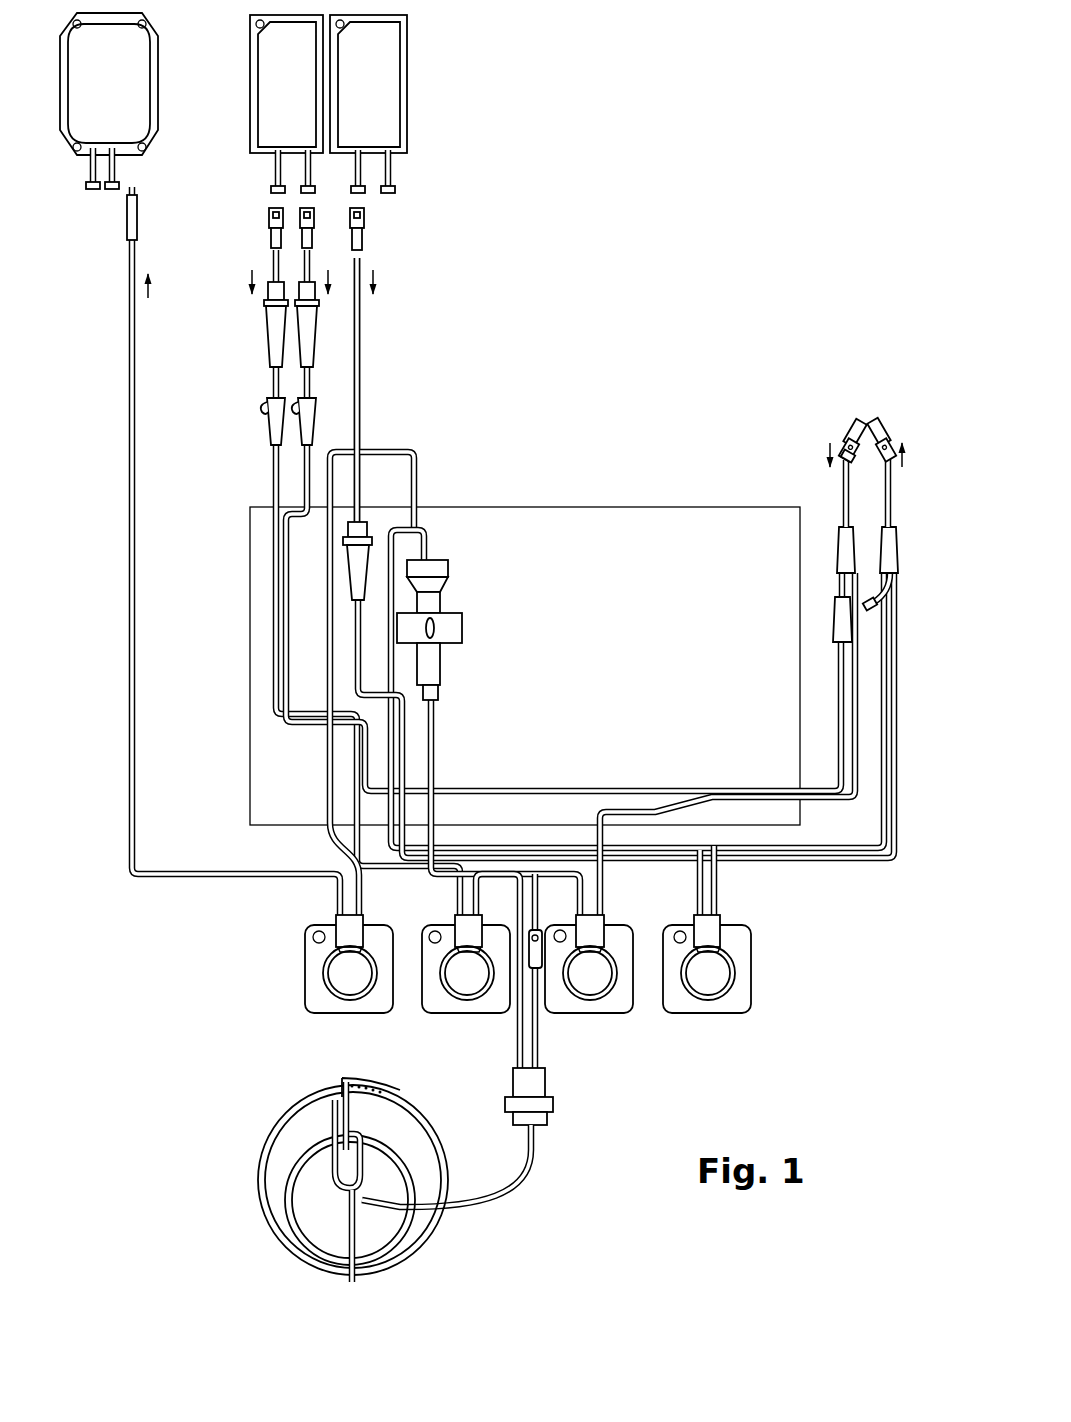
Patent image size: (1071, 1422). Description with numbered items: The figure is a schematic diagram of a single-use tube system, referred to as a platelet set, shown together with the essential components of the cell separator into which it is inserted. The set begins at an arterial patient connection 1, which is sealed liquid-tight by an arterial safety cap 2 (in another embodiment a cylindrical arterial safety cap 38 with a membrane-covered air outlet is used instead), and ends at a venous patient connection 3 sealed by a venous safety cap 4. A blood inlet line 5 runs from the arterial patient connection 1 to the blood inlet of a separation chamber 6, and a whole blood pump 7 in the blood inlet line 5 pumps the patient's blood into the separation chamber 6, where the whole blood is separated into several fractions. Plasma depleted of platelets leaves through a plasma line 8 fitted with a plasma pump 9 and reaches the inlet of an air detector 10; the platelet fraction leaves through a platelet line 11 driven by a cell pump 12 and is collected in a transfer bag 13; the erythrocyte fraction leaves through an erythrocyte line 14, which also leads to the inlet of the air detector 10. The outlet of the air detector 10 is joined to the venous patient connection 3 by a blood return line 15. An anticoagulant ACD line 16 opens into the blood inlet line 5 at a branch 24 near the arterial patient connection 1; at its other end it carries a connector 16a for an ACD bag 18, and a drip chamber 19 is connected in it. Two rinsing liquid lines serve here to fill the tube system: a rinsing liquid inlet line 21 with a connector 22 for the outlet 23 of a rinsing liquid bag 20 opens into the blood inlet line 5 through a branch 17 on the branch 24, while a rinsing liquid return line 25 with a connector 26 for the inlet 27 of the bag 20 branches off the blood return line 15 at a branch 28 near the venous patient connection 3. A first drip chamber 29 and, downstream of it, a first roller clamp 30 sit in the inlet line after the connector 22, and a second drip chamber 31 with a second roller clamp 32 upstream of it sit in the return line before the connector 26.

The arterial patient connection 1 is at (838, 445).
The arterial safety cap 38 is at (848, 456).
The arterial safety cap 2 is at (852, 418).
The venous patient connection 3 is at (893, 420).
The venous safety cap 4 is at (875, 425).
The blood inlet line 5 is at (632, 810).
The separation chamber 6 is at (268, 1122).
The whole blood pump 7 is at (607, 1003).
The plasma line 8 is at (517, 1058).
The plasma pump 9 is at (433, 1003).
The air detector 10 is at (452, 605).
The platelet line 11 is at (527, 1028).
The cell pump 12 is at (320, 1003).
The transfer bag 13 is at (150, 80).
The erythrocyte line 14 is at (392, 770).
The blood return line 15 is at (438, 722).
The ACD line 16 is at (360, 362).
The connector 16a is at (366, 230).
The branch 17 is at (838, 618).
The ACD bag 18 is at (390, 80).
The drip chamber 19 is at (362, 530).
The rinsing liquid bag 20 is at (262, 108).
The rinsing liquid inlet line 21 is at (273, 468).
The connector 22 is at (268, 230).
The outlet 23 is at (272, 185).
The branch 24 is at (837, 548).
The rinsing liquid return line 25 is at (310, 393).
The connector 26 is at (316, 230).
The inlet 27 is at (308, 186).
The branch 28 is at (882, 555).
The first drip chamber 29 is at (270, 335).
The first roller clamp 30 is at (270, 425).
The second drip chamber 31 is at (308, 335).
The second roller clamp 32 is at (313, 425).